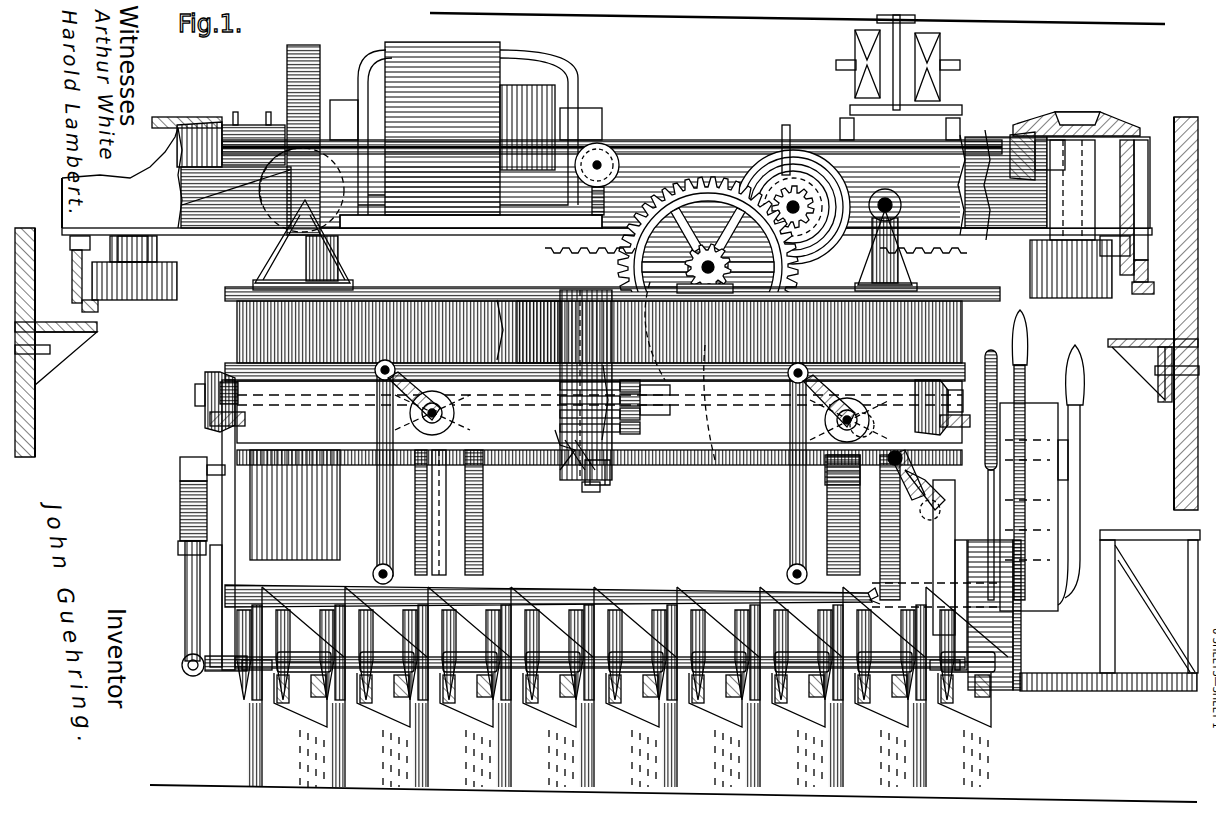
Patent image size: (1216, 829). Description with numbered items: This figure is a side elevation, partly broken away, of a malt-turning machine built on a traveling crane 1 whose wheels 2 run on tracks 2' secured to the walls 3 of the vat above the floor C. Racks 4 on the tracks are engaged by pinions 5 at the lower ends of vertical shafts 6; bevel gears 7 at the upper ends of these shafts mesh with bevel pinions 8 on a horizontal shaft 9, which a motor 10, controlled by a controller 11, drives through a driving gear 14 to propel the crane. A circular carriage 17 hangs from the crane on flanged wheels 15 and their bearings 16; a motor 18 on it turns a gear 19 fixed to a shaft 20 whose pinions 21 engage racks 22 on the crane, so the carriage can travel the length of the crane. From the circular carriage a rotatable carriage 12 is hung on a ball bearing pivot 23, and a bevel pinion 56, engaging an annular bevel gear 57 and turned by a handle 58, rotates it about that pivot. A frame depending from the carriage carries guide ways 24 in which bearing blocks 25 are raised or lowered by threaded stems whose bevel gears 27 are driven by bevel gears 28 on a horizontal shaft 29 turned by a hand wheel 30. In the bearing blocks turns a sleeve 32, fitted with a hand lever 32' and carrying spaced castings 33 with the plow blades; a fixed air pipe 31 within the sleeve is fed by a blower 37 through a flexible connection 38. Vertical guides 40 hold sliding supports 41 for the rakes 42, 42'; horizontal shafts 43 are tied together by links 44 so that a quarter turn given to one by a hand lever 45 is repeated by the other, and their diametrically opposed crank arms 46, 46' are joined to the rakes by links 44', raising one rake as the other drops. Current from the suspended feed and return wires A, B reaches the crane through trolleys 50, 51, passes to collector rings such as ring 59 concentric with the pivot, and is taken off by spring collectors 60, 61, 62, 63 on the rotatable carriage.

The traveling crane 1 is at (520, 228).
The wheels 2 is at (614, 185).
The tracks 2' is at (598, 276).
The walls 3 is at (36, 404).
The racks 4 is at (84, 300).
The pinions 5 is at (160, 298).
The shafts 6 is at (152, 250).
The bevel gears 7 is at (170, 118).
The bevel pinions 8 is at (222, 122).
The shaft 9 is at (345, 138).
The motor 10 is at (466, 135).
The controller 11 is at (1048, 492).
The rotatable carriage 12 is at (720, 490).
The driving gear 14 is at (306, 58).
The flanged wheels 15 is at (265, 178).
The bearings 16 is at (322, 252).
The circular carriage 17 is at (462, 290).
The motor 18 is at (790, 172).
The gear 19 is at (678, 192).
The shaft 20 is at (725, 278).
The pinions 21 is at (680, 285).
The racks 22 is at (572, 252).
The ball bearing pivot 23 is at (585, 315).
The guide ways 24 is at (935, 560).
The bearing blocks 25 is at (586, 605).
The bevel gears 27 is at (215, 425).
The bevel gears 28 is at (207, 380).
The horizontal shaft 29 is at (530, 400).
The hand wheel 30 is at (990, 352).
The fixed air pipe 31 is at (197, 676).
The sleeve 32 is at (593, 704).
The hand lever 32' is at (1031, 615).
The castings 33 is at (790, 655).
The blower 37 is at (182, 478).
The flexible connection 38 is at (186, 592).
The vertical guides 40 is at (448, 548).
The supports 41 is at (432, 512).
The rake 42 is at (612, 578).
The rake 42' is at (1080, 629).
The horizontal shafts 43 is at (432, 410).
The links 44 is at (599, 512).
The links 44' is at (668, 531).
The hand lever 45 is at (918, 500).
The crank arm 46 is at (610, 413).
The crank arm 46' is at (695, 456).
The trolley 50 is at (840, 66).
The trolley 51 is at (962, 64).
The bevel pinion 56 is at (563, 380).
The annular bevel gear 57 is at (530, 385).
The handle 58 is at (572, 430).
The collector ring 59 is at (578, 452).
The spring collector 60 is at (648, 380).
The spring collector 61 is at (620, 388).
The spring collector 62 is at (620, 416).
The spring collector 63 is at (602, 488).
The feed wire A is at (858, 42).
The return wire B is at (942, 44).
The floor C is at (210, 785).